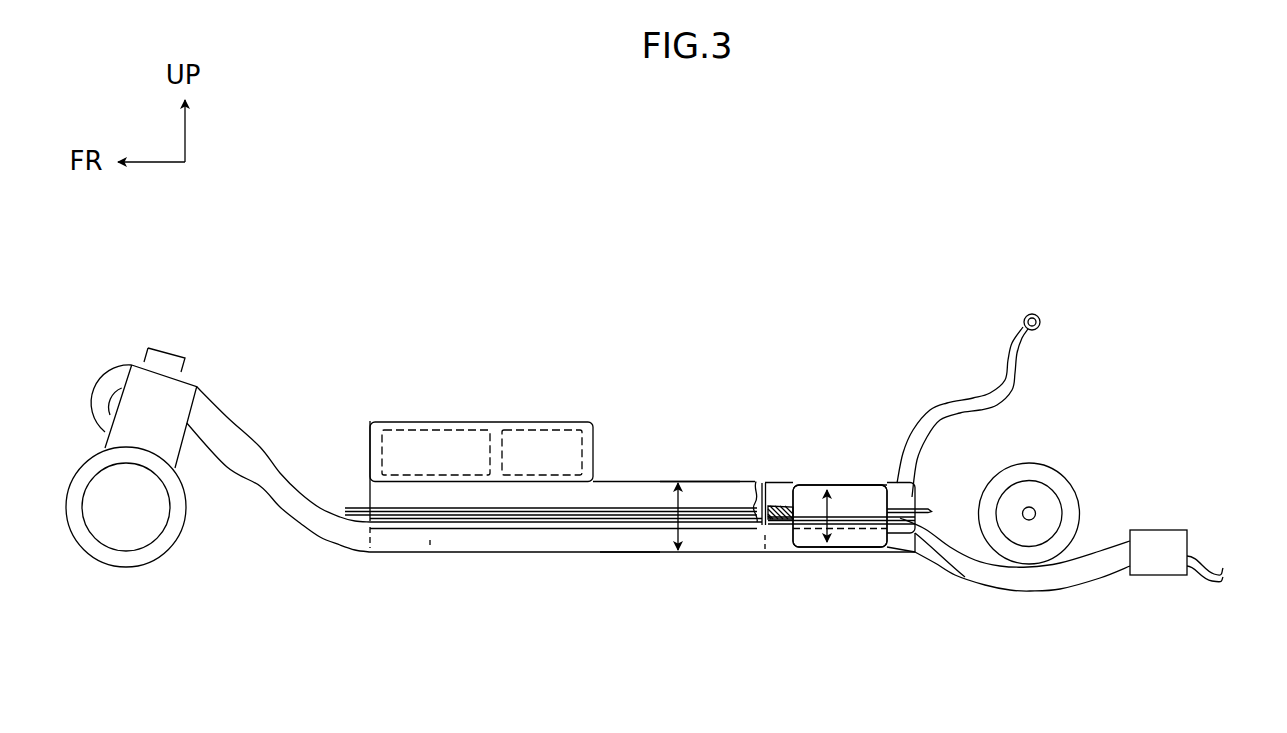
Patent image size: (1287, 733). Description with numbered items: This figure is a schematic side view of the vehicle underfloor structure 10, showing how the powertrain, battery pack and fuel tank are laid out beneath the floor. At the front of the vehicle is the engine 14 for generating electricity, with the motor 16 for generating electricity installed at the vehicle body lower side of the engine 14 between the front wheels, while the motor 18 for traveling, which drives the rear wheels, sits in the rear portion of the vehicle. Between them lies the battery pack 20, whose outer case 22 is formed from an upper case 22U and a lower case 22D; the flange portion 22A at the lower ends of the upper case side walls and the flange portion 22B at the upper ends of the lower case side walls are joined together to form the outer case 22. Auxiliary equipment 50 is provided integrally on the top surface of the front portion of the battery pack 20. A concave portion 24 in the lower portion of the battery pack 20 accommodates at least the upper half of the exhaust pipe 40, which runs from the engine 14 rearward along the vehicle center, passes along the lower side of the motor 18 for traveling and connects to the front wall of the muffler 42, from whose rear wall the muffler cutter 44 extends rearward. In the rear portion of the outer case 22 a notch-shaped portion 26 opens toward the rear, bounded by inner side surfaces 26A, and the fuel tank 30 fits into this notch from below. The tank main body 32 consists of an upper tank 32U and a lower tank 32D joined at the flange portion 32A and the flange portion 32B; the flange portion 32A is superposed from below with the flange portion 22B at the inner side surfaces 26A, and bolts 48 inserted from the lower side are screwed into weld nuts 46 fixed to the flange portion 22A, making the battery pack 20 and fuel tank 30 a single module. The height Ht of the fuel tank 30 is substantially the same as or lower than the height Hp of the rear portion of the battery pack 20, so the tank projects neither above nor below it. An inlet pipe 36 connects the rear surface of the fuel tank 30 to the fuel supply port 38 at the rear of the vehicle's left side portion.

The vehicle underfloor structure 10 is at (816, 564).
The engine 14 is at (102, 390).
The motor for generating electricity 16 is at (113, 530).
The motor for traveling 18 is at (1040, 502).
The battery pack 20 is at (601, 478).
The outer case 22 is at (624, 483).
The upper case 22U is at (710, 480).
The lower case 22D is at (627, 553).
The flange portion 22A is at (935, 508).
The flange portion 22B is at (947, 568).
The concave portion 24 is at (430, 541).
The notch-shaped portion 26 is at (779, 479).
The inner side surfaces 26A is at (918, 498).
The fuel tank 30 is at (832, 480).
The tank main body 32 is at (867, 485).
The upper tank 32U is at (875, 485).
The lower tank 32D is at (873, 553).
The flange portion 32A is at (937, 553).
The flange portion 32B is at (920, 540).
The inlet pipe 36 is at (1017, 362).
The fuel supply port 38 is at (1039, 316).
The exhaust pipe 40 is at (528, 538).
The muffler 42 is at (1151, 542).
The muffler cutter 44 is at (1216, 567).
The weld nuts 46 is at (786, 505).
The bolts 48 is at (783, 553).
The auxiliary equipment 50 is at (523, 440).
The height of the rear portion side of the battery pack Hp is at (678, 535).
The height of the fuel tank Ht is at (843, 553).